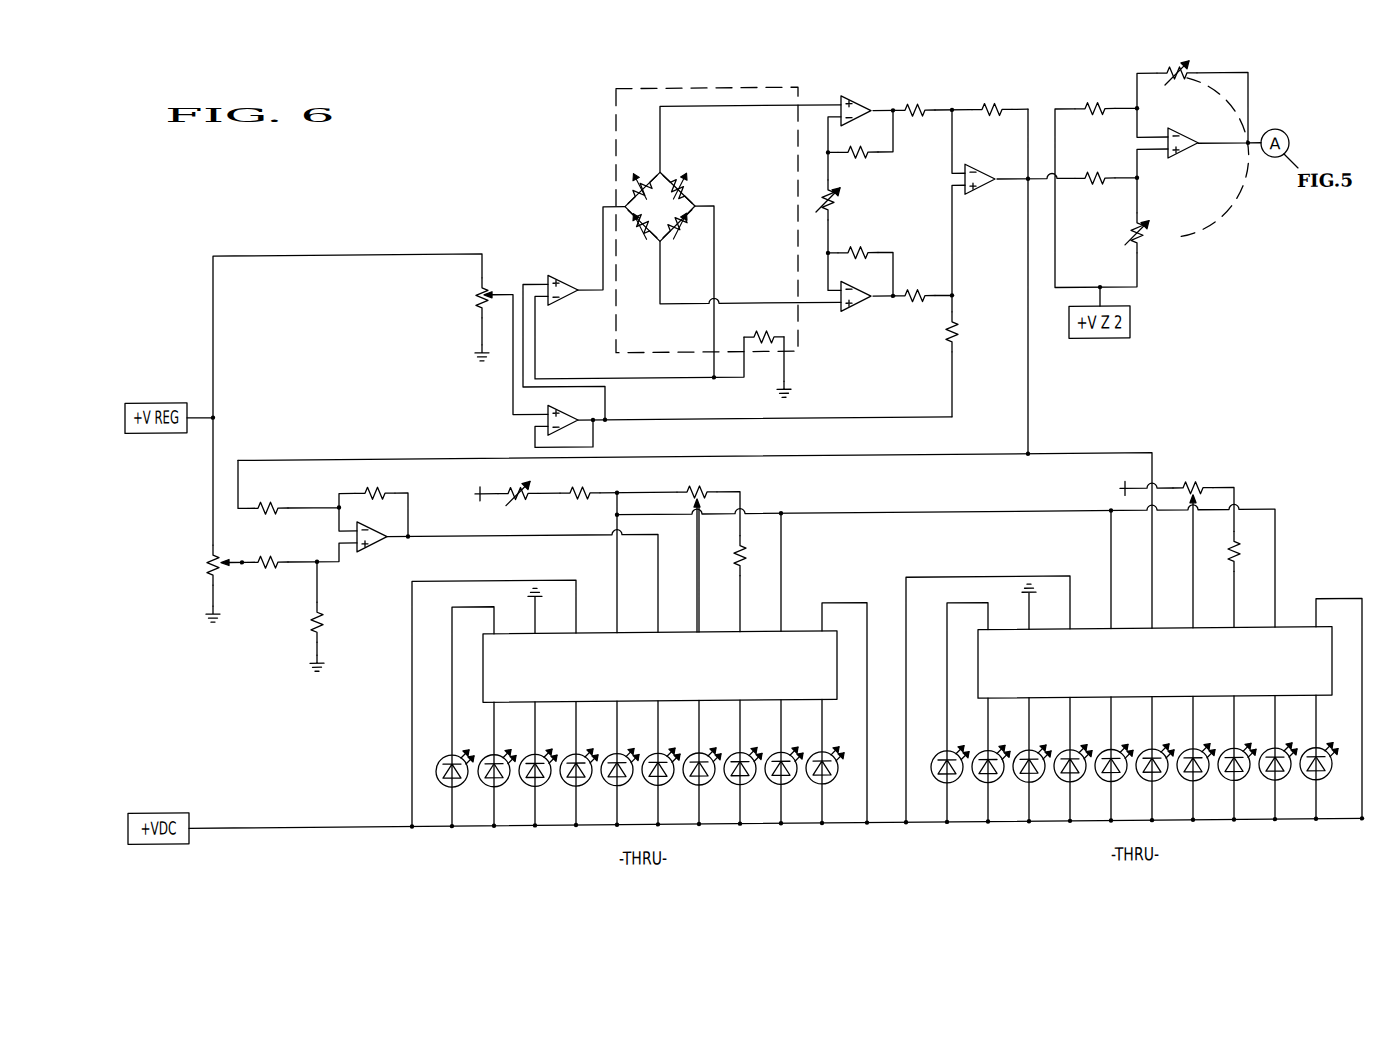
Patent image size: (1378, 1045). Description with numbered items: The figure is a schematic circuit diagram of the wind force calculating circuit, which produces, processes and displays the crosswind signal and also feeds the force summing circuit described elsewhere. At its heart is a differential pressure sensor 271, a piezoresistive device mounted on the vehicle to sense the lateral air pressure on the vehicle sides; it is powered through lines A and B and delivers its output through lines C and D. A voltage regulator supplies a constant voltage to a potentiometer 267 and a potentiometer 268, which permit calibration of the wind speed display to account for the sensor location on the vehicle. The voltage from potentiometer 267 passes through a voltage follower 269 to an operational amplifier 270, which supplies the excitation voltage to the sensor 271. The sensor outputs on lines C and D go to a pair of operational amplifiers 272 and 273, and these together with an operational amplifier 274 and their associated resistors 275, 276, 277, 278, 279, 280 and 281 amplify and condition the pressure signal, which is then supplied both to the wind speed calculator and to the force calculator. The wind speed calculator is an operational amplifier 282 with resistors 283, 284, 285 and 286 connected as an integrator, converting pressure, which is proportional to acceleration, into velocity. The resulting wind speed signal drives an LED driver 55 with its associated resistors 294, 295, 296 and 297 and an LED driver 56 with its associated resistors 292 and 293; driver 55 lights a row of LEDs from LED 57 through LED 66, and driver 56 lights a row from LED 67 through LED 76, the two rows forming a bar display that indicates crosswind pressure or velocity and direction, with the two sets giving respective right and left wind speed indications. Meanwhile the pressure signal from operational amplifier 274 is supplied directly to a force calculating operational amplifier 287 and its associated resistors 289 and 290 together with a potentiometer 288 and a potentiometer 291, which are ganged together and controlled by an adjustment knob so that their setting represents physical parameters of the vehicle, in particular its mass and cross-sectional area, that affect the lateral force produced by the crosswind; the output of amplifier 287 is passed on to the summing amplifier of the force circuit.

The LED driver 55 is at (661, 670).
The LED driver 56 is at (1156, 666).
The LED 57 is at (447, 784).
The LED 66 is at (829, 784).
The LED 67 is at (942, 784).
The LED 76 is at (1323, 784).
The potentiometer 267 is at (471, 319).
The potentiometer 268 is at (207, 583).
The voltage follower 269 is at (565, 412).
The operational amplifier 270 is at (565, 282).
The differential pressure sensor 271 is at (702, 231).
The operational amplifier 272 is at (860, 103).
The operational amplifier 273 is at (851, 308).
The operational amplifier 274 is at (985, 171).
The resistor 275 is at (915, 295).
The resistor 276 is at (967, 330).
The resistor 277 is at (857, 259).
The resistor 278 is at (915, 113).
The resistor 279 is at (858, 152).
The resistor 280 is at (992, 112).
The resistor 281 is at (840, 202).
The operational amplifier 282 is at (375, 544).
The resistor 283 is at (304, 635).
The resistor 284 is at (268, 562).
The resistor 285 is at (268, 509).
The resistor 286 is at (375, 495).
The force calculating operational amplifier 287 is at (1186, 134).
The potentiometer 288 is at (1150, 237).
The resistor 289 is at (1095, 179).
The resistor 290 is at (1095, 109).
The potentiometer 291 is at (1186, 68).
The resistor 292 is at (1221, 556).
The resistor 293 is at (1192, 482).
The resistor 294 is at (727, 561).
The resistor 295 is at (698, 486).
The resistor 296 is at (580, 495).
The resistor 297 is at (518, 492).